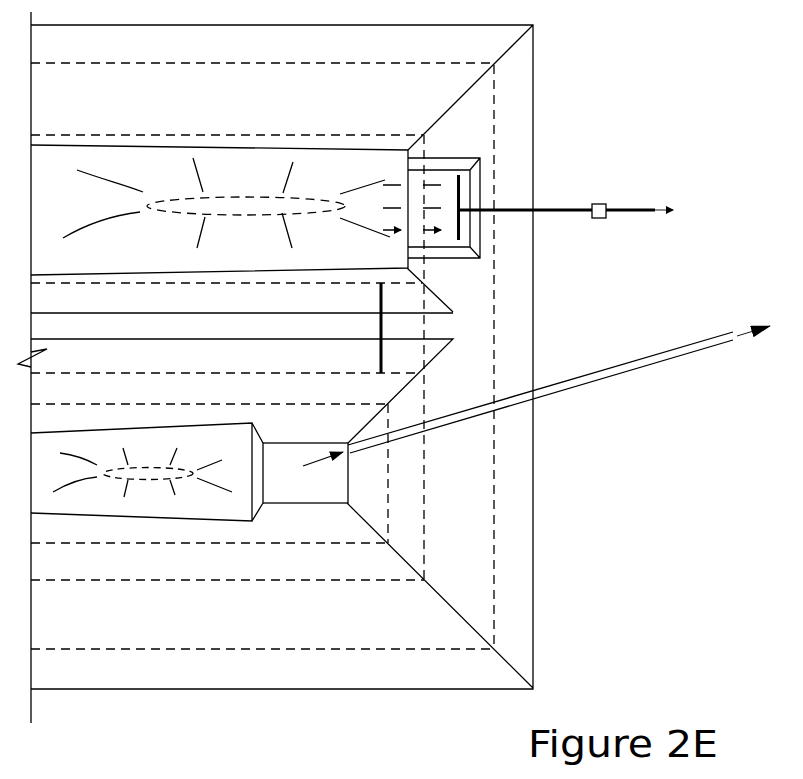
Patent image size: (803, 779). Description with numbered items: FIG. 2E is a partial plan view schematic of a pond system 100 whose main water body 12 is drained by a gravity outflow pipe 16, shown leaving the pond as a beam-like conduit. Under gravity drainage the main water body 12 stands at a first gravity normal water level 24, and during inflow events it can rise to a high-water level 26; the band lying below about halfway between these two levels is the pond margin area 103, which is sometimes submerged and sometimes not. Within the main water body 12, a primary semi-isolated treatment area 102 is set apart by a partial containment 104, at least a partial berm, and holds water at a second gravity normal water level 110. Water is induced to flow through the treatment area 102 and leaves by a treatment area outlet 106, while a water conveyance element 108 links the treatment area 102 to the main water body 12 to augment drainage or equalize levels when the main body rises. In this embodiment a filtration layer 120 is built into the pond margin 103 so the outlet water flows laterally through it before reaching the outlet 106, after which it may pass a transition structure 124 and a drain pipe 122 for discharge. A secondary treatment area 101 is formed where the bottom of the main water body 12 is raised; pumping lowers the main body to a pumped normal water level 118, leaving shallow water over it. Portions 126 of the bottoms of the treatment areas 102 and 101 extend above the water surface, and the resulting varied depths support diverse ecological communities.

The pond system 100 is at (556, 524).
The main water body 12 is at (305, 473).
The outflow pipe 16 is at (559, 383).
The first gravity normal water level 24 is at (322, 370).
The high-water level 26 is at (238, 63).
The secondary treatment area 101 is at (147, 472).
The primary semi-isolated treatment area 102 is at (219, 210).
The pond margin area 103 is at (308, 108).
The partial containment 104 is at (242, 355).
The treatment area outlet 106 is at (560, 207).
The water conveyance element 108 is at (378, 327).
The second gravity normal water level 110 is at (222, 135).
The pumped normal water level 118 is at (192, 403).
The filtration layer 120 is at (442, 156).
The drain pipe 122 is at (630, 215).
The transition structure 124 is at (602, 203).
The portions of the bottom extending above the water surface 126 is at (246, 203).